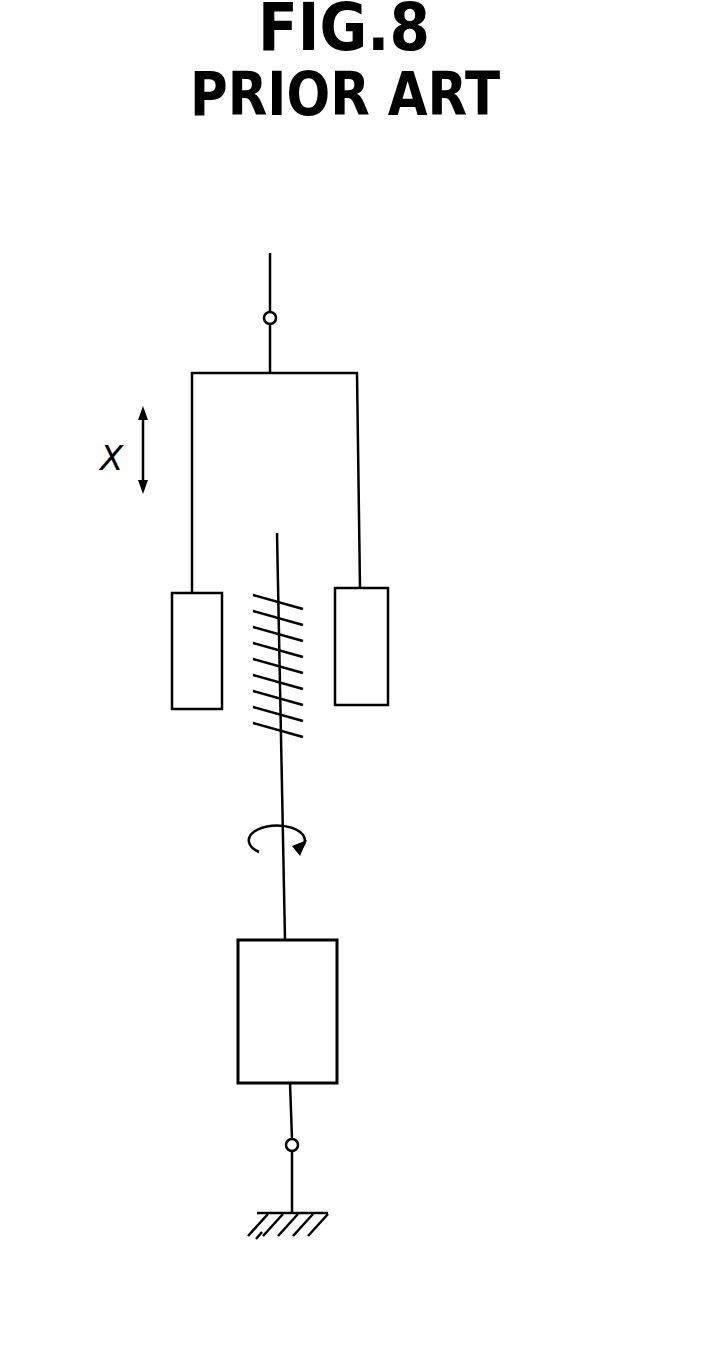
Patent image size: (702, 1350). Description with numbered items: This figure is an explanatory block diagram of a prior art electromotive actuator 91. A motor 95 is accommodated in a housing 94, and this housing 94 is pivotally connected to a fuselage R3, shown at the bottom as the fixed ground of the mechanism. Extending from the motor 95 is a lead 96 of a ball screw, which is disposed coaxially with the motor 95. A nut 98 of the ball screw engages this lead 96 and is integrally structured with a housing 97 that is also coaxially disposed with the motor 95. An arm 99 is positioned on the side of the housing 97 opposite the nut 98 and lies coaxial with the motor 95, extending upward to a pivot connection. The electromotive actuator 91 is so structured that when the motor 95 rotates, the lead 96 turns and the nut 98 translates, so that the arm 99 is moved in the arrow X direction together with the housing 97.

The electromotive actuator 91 is at (470, 792).
The housing 94 is at (292, 1110).
The motor 95 is at (238, 1016).
The lead of ball screw 96 is at (279, 777).
The housing 97 is at (358, 494).
The nut of ball screw 98 is at (172, 630).
The arm 99 is at (268, 348).
The fuselage R3 is at (306, 1226).